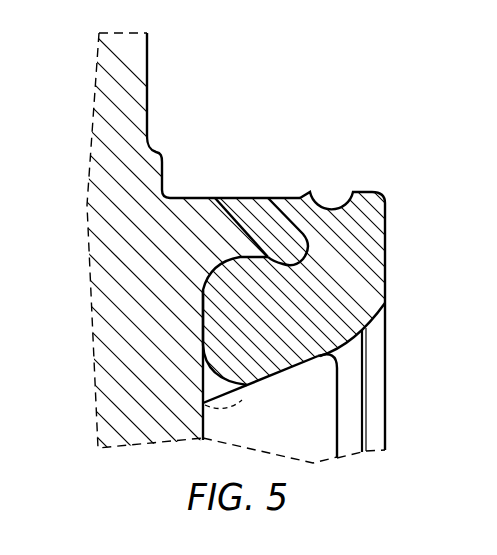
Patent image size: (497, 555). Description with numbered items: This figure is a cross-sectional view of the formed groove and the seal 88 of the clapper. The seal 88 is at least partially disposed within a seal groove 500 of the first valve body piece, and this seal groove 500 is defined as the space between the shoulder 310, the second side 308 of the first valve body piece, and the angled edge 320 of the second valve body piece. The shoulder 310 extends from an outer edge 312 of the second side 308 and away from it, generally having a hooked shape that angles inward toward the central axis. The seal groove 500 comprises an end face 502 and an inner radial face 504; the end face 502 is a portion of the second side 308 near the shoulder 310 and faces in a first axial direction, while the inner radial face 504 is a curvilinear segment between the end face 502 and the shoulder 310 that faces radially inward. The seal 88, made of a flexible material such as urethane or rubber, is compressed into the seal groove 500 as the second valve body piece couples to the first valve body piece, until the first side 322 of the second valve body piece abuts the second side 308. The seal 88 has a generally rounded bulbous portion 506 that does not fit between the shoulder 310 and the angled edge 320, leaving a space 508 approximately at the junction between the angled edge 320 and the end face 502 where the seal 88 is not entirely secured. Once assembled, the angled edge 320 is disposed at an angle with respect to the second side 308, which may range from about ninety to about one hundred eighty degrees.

The seal 88 is at (385, 278).
The second side 308 is at (203, 407).
The shoulder 310 is at (292, 242).
The outer edge 312 is at (223, 197).
The angled edge 320 is at (290, 370).
The first side 322 is at (385, 237).
The seal groove 500 is at (189, 264).
The end face 502 is at (197, 305).
The inner radial face 504 is at (242, 257).
The bulbous portion 506 is at (248, 277).
The space 508 is at (200, 367).